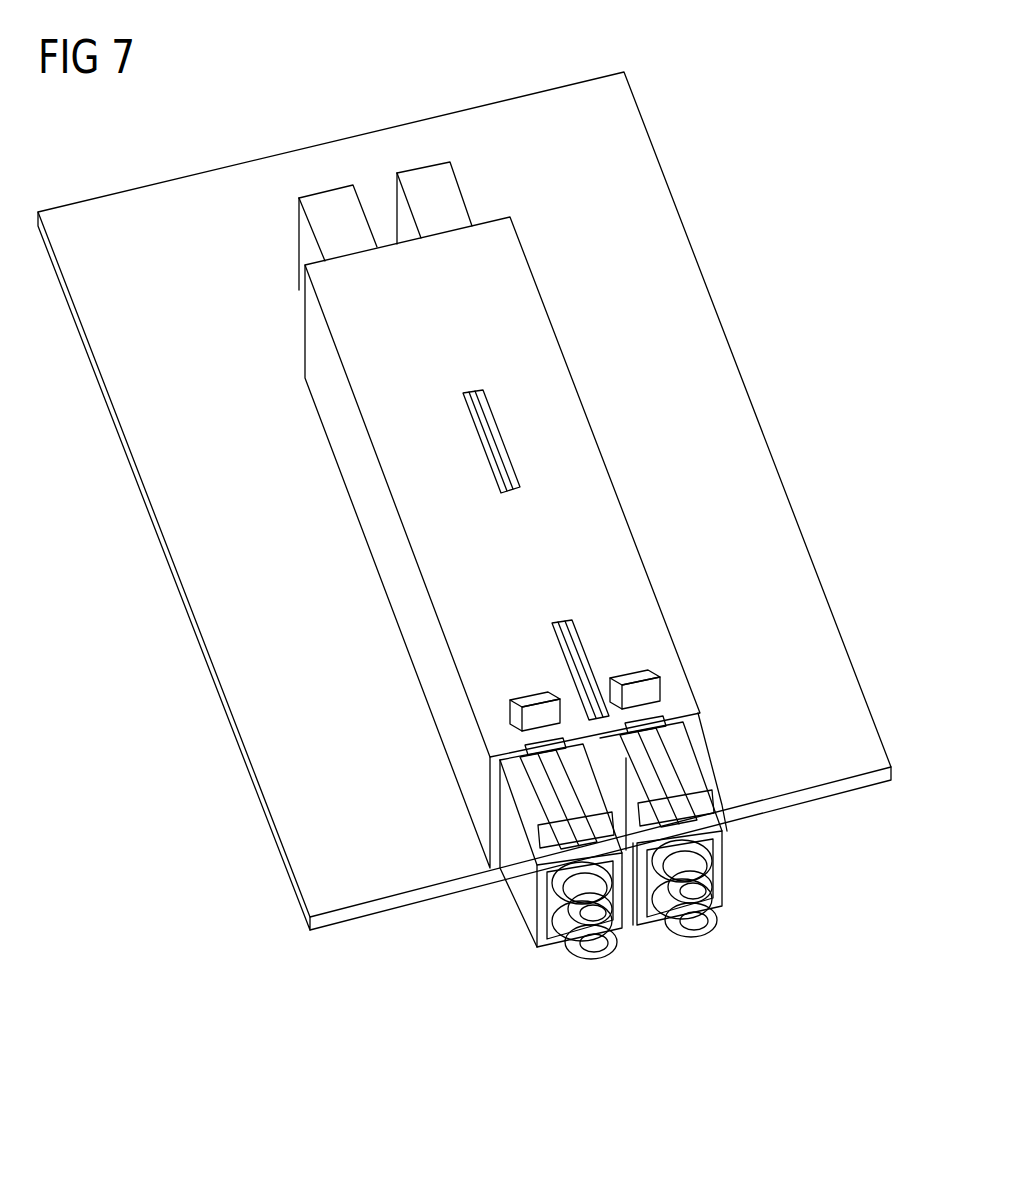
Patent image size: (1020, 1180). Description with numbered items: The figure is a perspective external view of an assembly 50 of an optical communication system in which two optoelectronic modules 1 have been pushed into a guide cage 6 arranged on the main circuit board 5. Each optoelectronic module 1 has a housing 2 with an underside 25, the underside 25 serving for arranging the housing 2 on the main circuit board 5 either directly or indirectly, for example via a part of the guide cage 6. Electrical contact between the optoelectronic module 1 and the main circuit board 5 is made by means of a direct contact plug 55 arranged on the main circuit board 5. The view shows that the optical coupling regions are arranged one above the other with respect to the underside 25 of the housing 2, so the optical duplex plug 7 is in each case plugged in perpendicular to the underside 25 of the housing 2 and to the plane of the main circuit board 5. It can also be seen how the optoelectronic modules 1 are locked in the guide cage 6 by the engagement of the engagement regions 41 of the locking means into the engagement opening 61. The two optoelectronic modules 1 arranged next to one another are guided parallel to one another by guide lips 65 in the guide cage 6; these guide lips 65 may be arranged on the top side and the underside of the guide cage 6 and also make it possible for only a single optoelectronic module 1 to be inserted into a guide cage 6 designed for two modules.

The optoelectronic module 1 is at (503, 910).
The housing 2 is at (727, 863).
The main circuit board 5 is at (233, 644).
The guide cage 6 is at (593, 461).
The optical duplex plug 7 is at (553, 938).
The underside 25 is at (647, 926).
The engagement region 41 is at (662, 682).
The assembly 50 is at (277, 900).
The direct contact plug 55 is at (326, 222).
The engagement opening 61 is at (627, 680).
The guide lips 65 is at (482, 411).